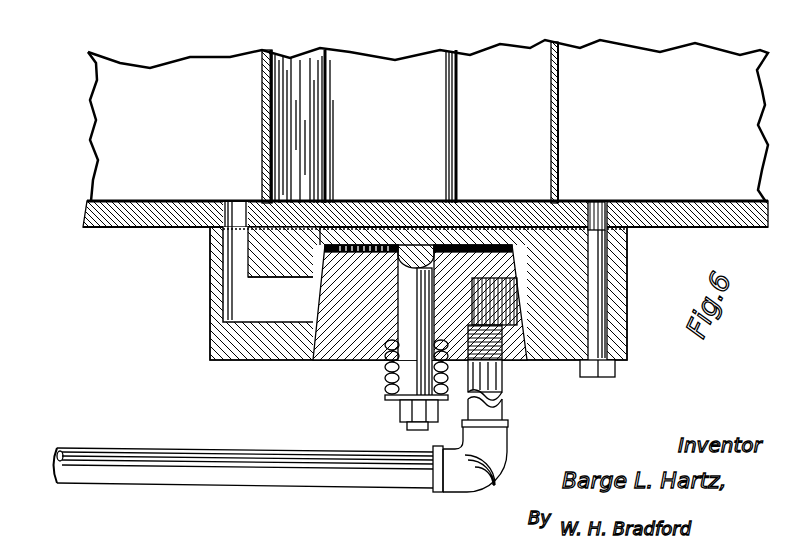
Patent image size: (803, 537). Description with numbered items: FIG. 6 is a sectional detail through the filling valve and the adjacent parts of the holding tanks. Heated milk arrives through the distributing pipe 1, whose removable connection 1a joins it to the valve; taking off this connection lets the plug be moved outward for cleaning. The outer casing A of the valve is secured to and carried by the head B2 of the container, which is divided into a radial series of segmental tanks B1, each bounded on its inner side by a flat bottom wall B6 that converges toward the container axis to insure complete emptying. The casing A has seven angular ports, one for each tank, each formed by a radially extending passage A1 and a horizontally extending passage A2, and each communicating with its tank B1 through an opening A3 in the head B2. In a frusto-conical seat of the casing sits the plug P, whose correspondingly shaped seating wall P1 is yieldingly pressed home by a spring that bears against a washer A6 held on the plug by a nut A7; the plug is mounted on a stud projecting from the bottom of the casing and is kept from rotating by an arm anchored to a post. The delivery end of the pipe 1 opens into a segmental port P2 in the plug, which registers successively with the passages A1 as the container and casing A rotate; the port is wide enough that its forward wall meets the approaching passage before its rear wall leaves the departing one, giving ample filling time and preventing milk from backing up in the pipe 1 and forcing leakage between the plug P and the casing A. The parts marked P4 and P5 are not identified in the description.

The distributing pipe 1 is at (150, 462).
The connection of the conduit 1a is at (502, 377).
The outer casing of the filling valve A is at (210, 311).
The radially extending passage A1 is at (320, 289).
The horizontally extending passage A2 is at (229, 260).
The opening in the head A3 is at (237, 203).
The washer A6 is at (385, 396).
The nut A7 is at (400, 413).
The tank B1 is at (428, 121).
The head of the container B2 is at (138, 228).
The inner or bottom wall of the tank B6 is at (262, 101).
The plug P is at (328, 363).
The seating wall of the plug P1 is at (313, 338).
The segmental port P2 is at (494, 301).
The spring P4 is at (416, 367).
The rod P5 is at (403, 368).